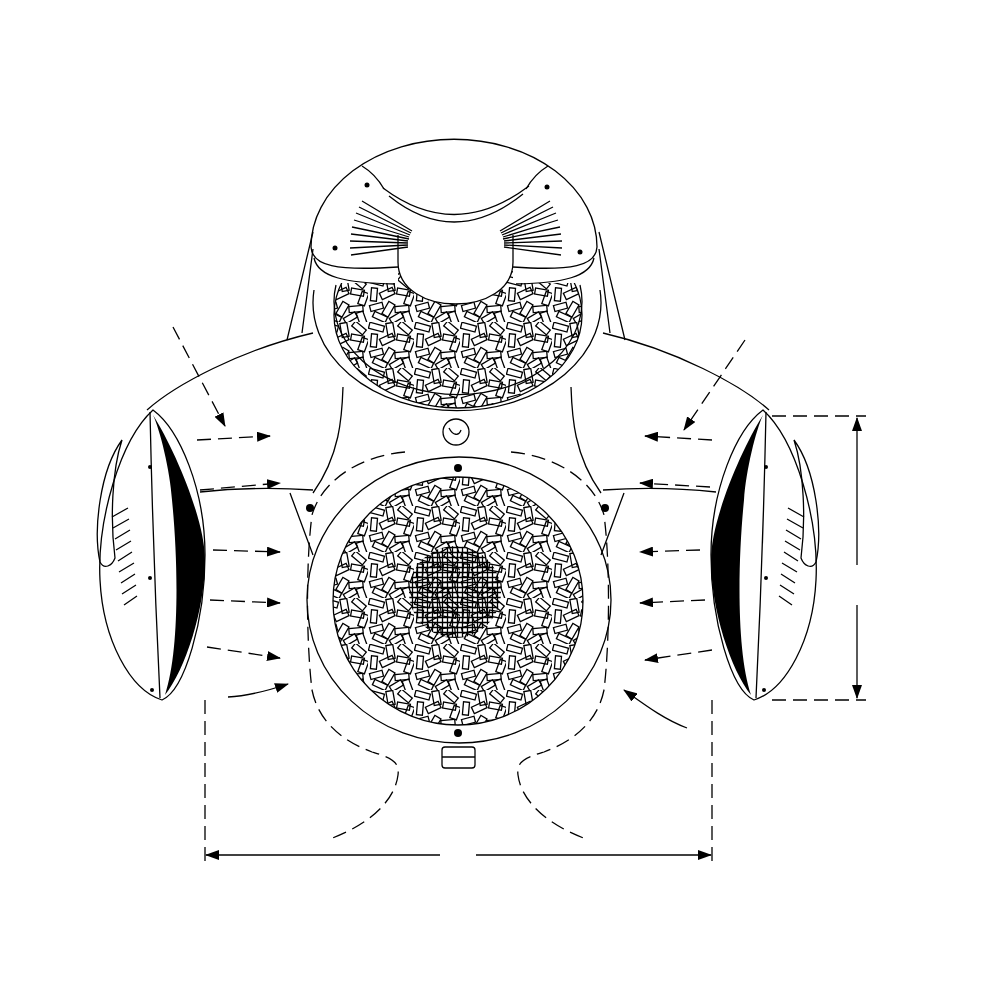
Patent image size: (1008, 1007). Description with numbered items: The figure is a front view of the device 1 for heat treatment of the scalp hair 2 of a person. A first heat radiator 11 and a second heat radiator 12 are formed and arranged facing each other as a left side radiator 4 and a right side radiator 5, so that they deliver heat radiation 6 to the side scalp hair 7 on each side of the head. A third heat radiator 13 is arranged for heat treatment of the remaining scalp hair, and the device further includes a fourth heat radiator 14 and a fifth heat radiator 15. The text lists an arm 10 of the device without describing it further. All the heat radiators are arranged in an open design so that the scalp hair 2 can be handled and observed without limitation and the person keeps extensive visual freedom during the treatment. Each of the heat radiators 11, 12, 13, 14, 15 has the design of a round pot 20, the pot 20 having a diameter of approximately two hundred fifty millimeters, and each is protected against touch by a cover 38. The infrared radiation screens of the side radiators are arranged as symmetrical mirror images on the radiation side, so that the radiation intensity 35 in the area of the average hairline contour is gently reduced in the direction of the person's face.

The device 1 is at (590, 86).
The scalp hair 2 is at (607, 722).
The left side radiator 4 is at (150, 724).
The right side radiator 5 is at (752, 724).
The heat radiation 6 is at (477, 480).
The side scalp hair 7 is at (458, 714).
The arm 10 is at (180, 405).
The first heat radiator 11 is at (152, 555).
The second heat radiator 12 is at (763, 555).
The third heat radiator 13 is at (595, 305).
The fourth heat radiator 14 is at (600, 232).
The fifth heat radiator 15 is at (347, 690).
The pot 20 is at (503, 489).
The radiation intensity 35 is at (459, 493).
The cover 38 is at (330, 359).